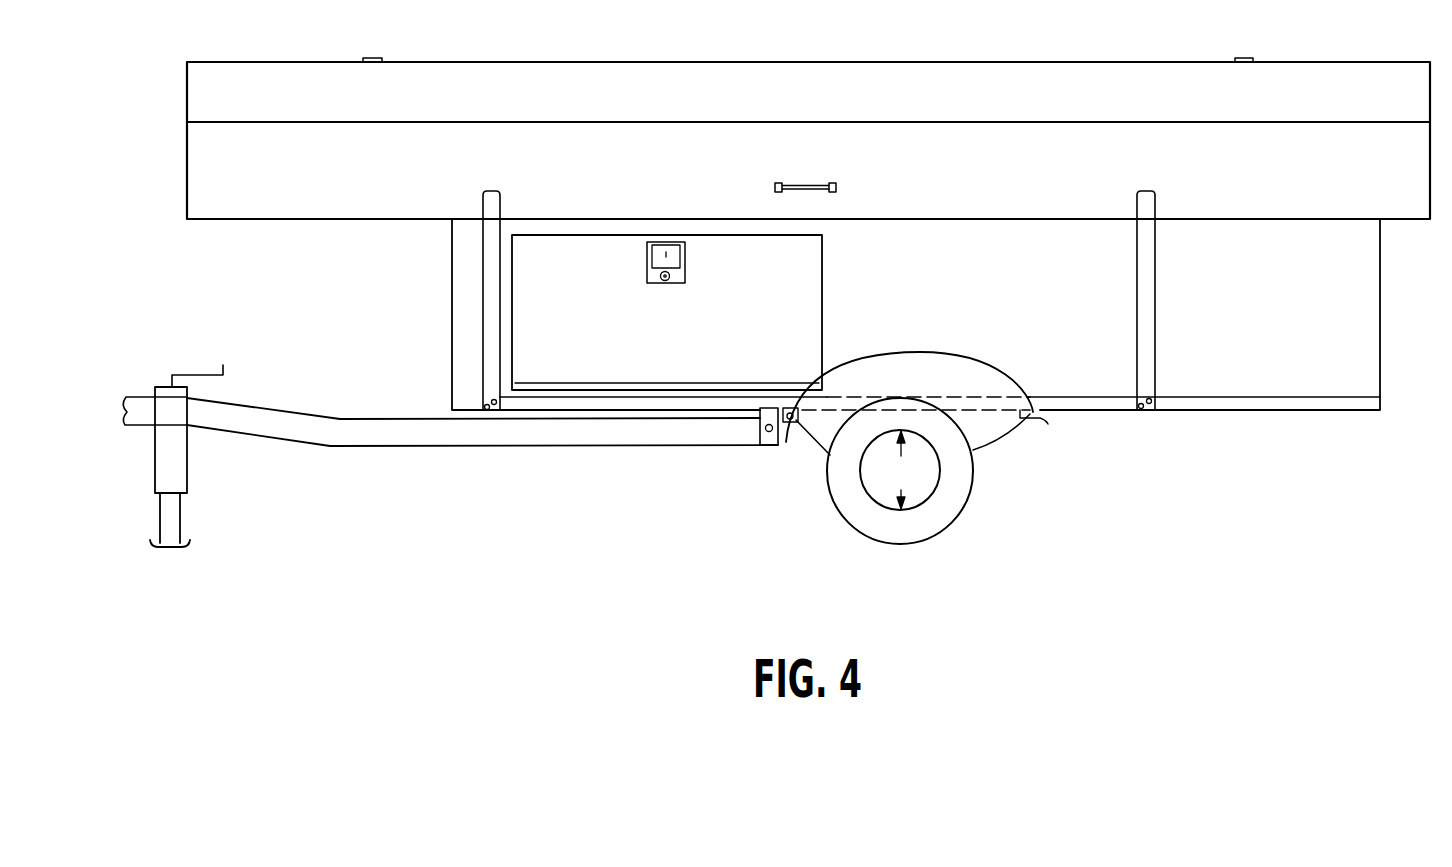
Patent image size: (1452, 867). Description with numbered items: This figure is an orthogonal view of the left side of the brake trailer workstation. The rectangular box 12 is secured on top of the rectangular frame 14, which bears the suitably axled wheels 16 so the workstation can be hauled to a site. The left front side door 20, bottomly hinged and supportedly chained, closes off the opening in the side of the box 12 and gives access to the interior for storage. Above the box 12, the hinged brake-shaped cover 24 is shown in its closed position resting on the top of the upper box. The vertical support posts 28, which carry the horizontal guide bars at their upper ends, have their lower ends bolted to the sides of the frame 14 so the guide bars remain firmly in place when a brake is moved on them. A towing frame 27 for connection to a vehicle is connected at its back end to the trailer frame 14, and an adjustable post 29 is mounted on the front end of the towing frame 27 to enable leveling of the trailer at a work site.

The rectangular box 12 is at (996, 218).
The rectangular frame 14 is at (1090, 411).
The wheels 16 is at (852, 488).
The left front side door 20 is at (622, 371).
The brake-shaped cover 24 is at (911, 158).
The towing frame 27 is at (318, 446).
The vertical support posts 28 is at (490, 317).
The adjustable post 29 is at (178, 478).